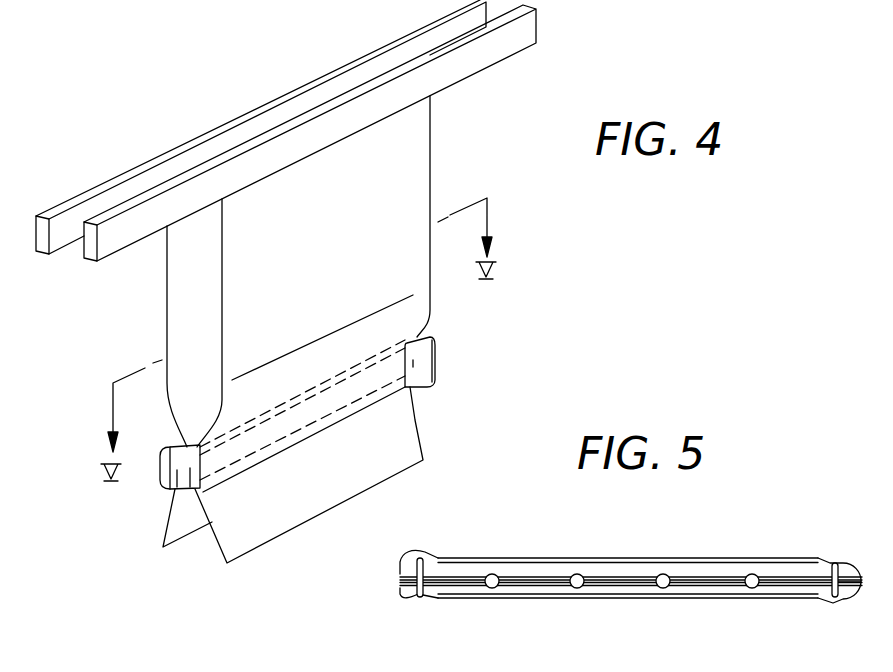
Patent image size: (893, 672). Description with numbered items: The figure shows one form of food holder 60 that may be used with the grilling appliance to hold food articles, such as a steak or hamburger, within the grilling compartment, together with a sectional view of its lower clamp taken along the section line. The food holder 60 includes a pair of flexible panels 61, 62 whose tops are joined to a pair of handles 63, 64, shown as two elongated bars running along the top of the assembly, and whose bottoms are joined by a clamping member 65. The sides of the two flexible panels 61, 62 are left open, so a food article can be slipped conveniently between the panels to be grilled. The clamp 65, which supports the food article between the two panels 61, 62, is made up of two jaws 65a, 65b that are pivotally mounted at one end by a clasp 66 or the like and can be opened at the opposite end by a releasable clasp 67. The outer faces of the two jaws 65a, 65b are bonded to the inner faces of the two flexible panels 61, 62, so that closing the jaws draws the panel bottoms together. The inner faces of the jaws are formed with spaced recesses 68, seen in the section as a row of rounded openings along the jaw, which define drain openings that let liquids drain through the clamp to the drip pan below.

In FIG. 4, the food holder 60 is at (286, 130).
In FIG. 4, the flexible panel 61 is at (170, 267).
In FIG. 5, the flexible panel 61 is at (732, 560).
In FIG. 4, the flexible panel 62 is at (225, 308).
In FIG. 5, the flexible panel 62 is at (770, 600).
In FIG. 4, the handle 63 is at (263, 113).
In FIG. 4, the handle 64 is at (352, 103).
In FIG. 4, the clamping member 65 is at (155, 493).
In FIG. 5, the clamping member 65 is at (630, 566).
In FIG. 5, the jaw 65a is at (538, 567).
In FIG. 5, the jaw 65b is at (538, 590).
In FIG. 5, the clasp 66 is at (824, 562).
In FIG. 5, the releasable clasp 67 is at (407, 595).
In FIG. 5, the recesses 68 is at (663, 575).